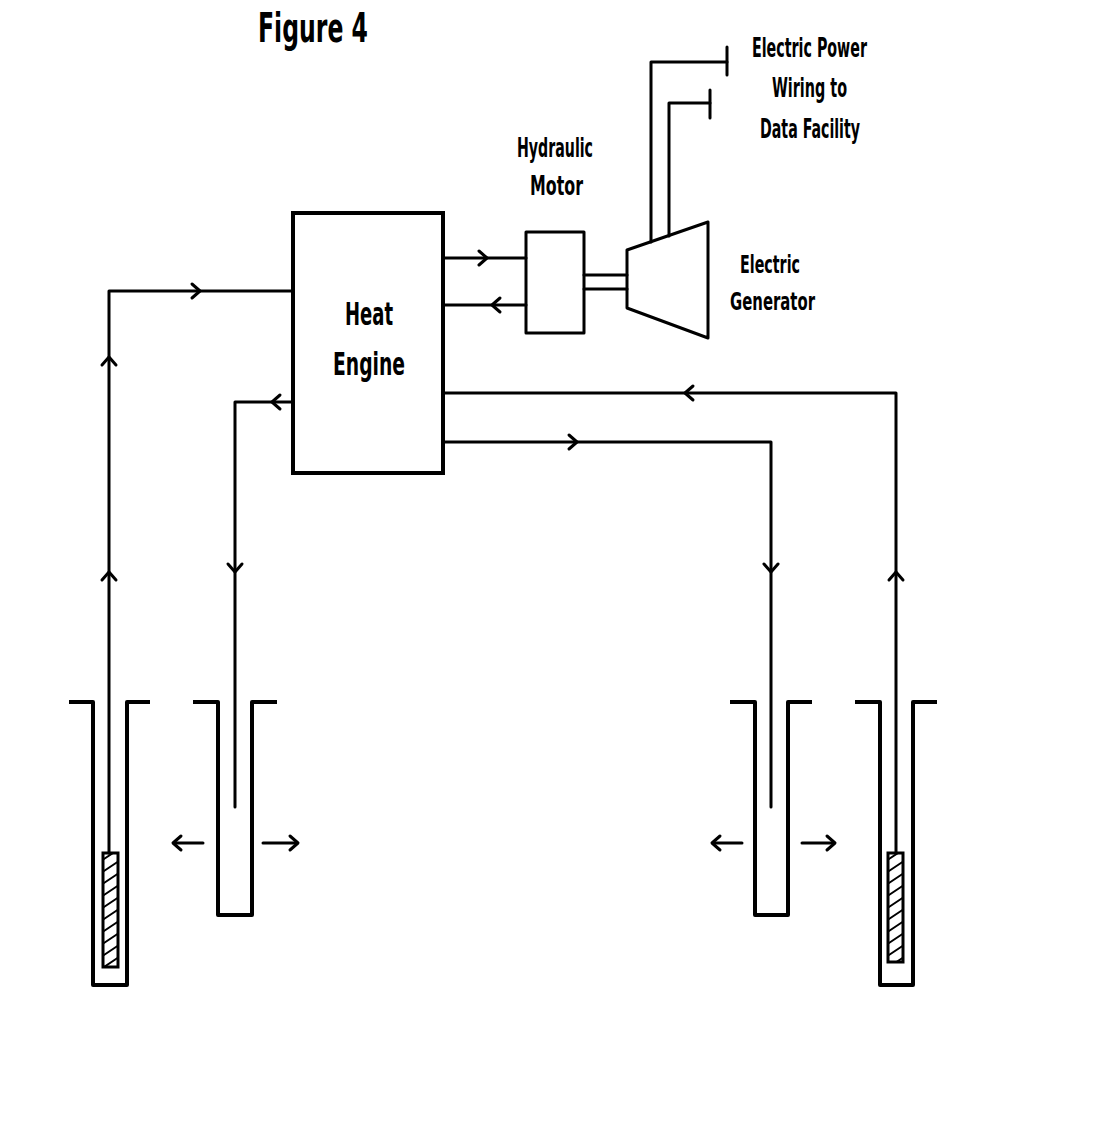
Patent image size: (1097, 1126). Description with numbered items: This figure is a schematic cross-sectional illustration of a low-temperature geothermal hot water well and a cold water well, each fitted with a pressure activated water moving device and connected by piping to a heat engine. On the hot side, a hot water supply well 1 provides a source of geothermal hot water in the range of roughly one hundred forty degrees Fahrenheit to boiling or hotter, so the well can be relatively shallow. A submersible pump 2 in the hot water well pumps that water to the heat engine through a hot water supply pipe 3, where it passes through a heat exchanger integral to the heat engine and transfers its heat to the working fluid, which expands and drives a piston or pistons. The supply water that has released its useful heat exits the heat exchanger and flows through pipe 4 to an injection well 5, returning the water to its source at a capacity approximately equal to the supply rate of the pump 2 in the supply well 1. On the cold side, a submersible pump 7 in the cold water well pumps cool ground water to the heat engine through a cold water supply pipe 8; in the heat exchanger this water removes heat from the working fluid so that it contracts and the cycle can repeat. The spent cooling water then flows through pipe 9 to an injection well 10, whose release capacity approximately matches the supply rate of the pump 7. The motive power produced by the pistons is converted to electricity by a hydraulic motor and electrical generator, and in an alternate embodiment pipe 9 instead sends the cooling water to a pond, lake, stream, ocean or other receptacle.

The hot water supply well 1 is at (128, 977).
The submersible pump 2 is at (102, 895).
The hot water supply pipe 3 is at (142, 288).
The pipe 4 is at (233, 443).
The injection well 5 is at (254, 802).
The submersible pump 7 is at (905, 903).
The cold water supply pipe 8 is at (866, 390).
The pipe 9 is at (710, 450).
The injection well 10 is at (753, 795).